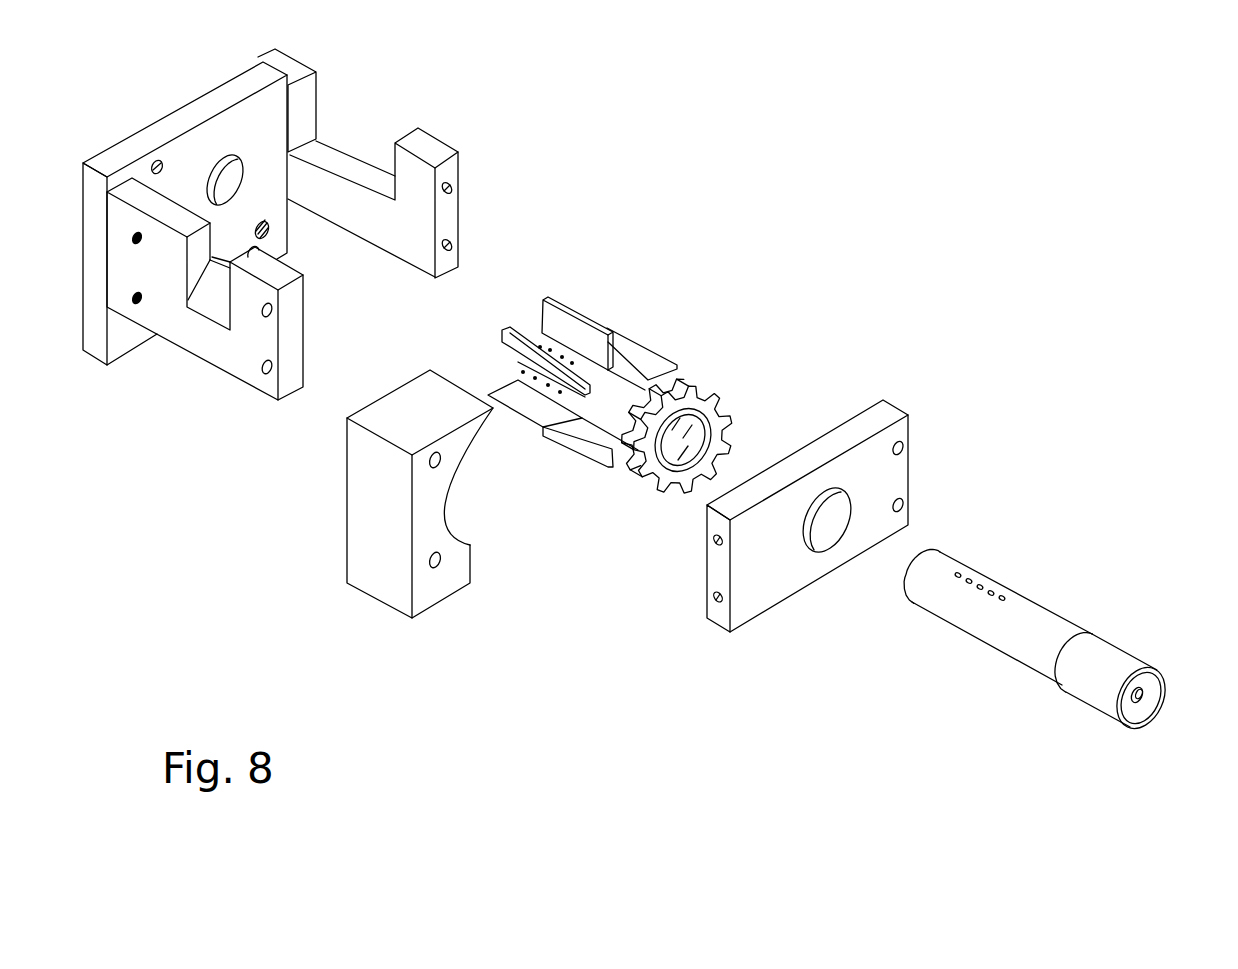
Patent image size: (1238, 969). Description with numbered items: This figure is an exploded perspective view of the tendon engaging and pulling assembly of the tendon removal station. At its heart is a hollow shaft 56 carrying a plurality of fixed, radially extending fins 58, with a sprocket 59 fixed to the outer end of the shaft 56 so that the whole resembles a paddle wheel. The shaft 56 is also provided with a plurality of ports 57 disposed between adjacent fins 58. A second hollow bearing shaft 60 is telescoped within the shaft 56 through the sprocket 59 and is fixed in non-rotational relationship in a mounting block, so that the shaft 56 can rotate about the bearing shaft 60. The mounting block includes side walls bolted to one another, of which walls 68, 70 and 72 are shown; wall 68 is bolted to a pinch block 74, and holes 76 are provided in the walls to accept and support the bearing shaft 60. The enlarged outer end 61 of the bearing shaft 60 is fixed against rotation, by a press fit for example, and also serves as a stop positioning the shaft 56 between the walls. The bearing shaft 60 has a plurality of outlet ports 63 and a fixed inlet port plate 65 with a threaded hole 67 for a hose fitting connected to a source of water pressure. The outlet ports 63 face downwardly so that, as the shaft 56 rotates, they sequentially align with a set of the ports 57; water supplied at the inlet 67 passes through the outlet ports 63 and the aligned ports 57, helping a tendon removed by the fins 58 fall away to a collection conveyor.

The hollow shaft 56 is at (612, 460).
The ports 57 is at (525, 372).
The fins 58 is at (583, 328).
The sprocket 59 is at (658, 478).
The bearing shaft 60 is at (1027, 653).
The enlarged outer end 61 is at (1097, 697).
The outlet ports 63 is at (1013, 593).
The inlet port plate 65 is at (1158, 690).
The threaded hole 67 is at (1133, 702).
The side wall 68 is at (160, 133).
The side wall 70 is at (423, 147).
The side wall 72 is at (220, 355).
The pinch block 74 is at (390, 588).
The holes 76 is at (228, 183).